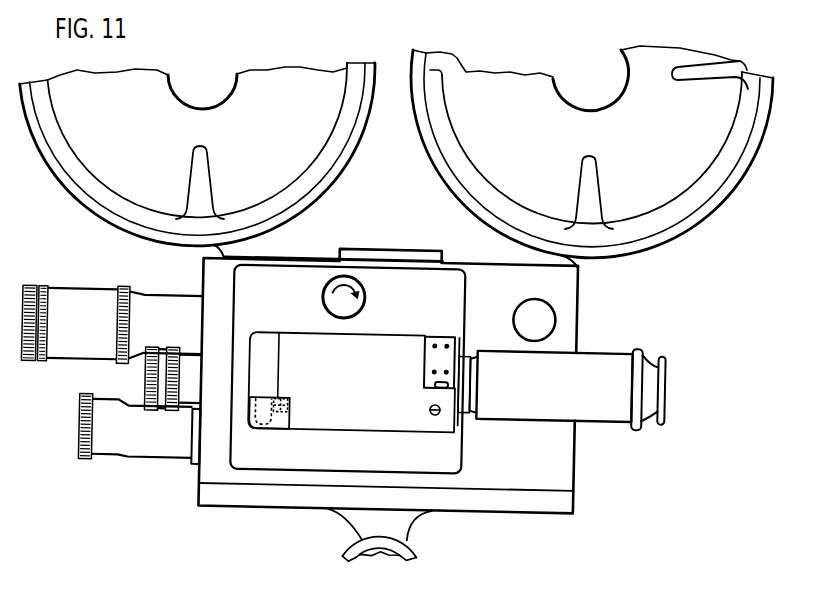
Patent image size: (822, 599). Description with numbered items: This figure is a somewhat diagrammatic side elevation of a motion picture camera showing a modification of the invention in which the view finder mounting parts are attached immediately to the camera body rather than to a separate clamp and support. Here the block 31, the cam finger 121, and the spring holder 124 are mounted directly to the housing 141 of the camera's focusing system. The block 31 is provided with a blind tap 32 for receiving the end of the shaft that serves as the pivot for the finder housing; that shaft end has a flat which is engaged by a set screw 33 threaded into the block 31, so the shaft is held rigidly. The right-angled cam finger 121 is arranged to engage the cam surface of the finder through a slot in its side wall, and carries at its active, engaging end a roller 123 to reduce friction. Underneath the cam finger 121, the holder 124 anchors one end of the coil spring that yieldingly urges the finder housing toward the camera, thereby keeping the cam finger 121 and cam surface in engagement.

The block 31 is at (258, 432).
The blind tap 32 is at (257, 410).
The set screw 33 is at (278, 399).
The cam finger 121 is at (456, 349).
The roller 123 is at (443, 389).
The holder 124 is at (436, 414).
The housing of the focusing system 141 is at (329, 431).